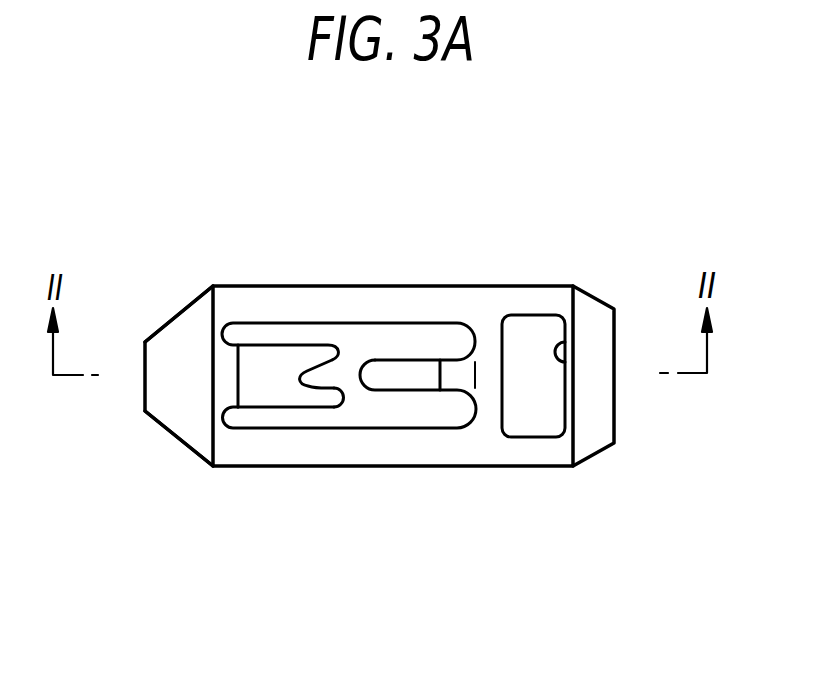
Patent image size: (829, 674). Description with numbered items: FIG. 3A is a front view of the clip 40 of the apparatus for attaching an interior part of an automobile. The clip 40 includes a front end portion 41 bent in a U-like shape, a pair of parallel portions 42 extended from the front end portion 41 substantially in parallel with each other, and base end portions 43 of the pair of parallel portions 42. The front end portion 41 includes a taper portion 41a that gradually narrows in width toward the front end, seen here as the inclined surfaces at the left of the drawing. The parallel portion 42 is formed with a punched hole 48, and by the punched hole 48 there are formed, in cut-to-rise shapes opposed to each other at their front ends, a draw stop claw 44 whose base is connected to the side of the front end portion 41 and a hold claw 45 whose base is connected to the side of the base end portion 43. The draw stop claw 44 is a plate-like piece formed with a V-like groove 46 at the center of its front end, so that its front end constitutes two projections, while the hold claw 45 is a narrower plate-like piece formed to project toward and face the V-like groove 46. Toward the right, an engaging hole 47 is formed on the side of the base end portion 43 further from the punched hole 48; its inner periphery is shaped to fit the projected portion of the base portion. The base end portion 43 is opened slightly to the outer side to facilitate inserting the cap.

The clip 40 is at (580, 240).
The front end portion 41 is at (143, 388).
The taper portion 41a is at (178, 313).
The parallel portion 42 is at (535, 467).
The base end portion 43 is at (596, 455).
The draw stop claw 44 is at (282, 407).
The hold claw 45 is at (411, 392).
The V-like groove 46 is at (334, 388).
The engaging hole 47 is at (568, 362).
The punched hole 48 is at (417, 338).